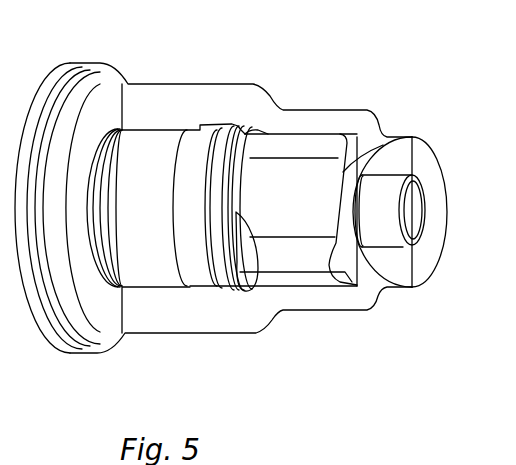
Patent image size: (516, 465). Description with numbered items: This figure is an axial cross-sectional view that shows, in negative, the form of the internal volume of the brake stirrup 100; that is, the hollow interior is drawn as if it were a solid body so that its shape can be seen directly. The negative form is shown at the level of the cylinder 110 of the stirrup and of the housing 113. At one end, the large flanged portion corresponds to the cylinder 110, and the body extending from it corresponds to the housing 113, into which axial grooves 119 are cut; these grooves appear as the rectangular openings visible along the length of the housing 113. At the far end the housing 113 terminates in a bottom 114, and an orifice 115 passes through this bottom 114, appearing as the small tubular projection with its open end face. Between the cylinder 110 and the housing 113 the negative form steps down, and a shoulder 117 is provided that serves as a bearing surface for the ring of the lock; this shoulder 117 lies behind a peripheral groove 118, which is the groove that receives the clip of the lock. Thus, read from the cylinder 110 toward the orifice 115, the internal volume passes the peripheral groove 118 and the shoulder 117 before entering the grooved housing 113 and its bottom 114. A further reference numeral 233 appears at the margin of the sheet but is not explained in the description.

The stirrup 100 is at (145, 63).
The cylinder 110 is at (182, 105).
The housing 113 is at (300, 206).
The bottom 114 is at (422, 137).
The orifice 115 is at (387, 232).
The shoulder 117 is at (268, 286).
The peripheral groove 118 is at (228, 120).
The axial grooves 119 is at (320, 147).
The reference numeral 233 is at (453, 462).